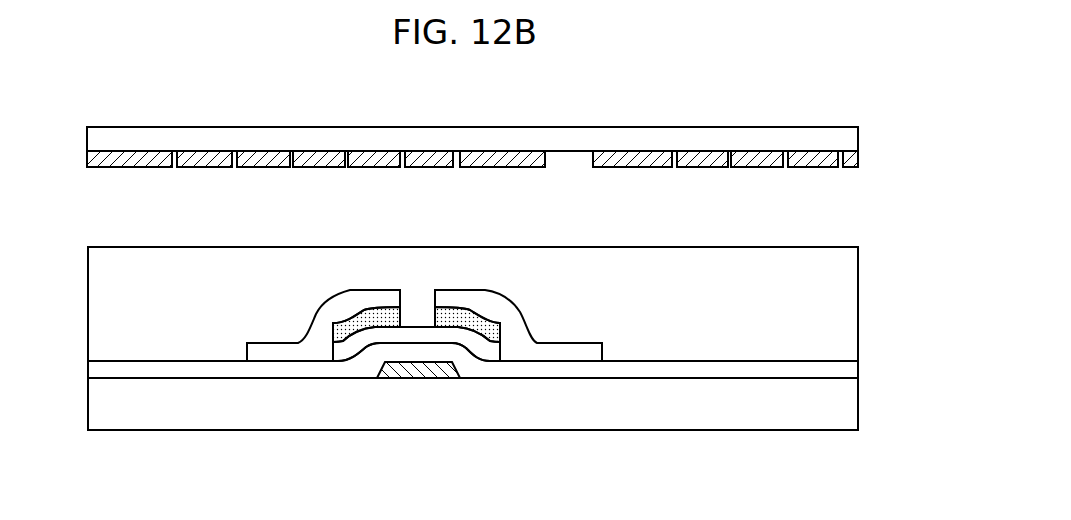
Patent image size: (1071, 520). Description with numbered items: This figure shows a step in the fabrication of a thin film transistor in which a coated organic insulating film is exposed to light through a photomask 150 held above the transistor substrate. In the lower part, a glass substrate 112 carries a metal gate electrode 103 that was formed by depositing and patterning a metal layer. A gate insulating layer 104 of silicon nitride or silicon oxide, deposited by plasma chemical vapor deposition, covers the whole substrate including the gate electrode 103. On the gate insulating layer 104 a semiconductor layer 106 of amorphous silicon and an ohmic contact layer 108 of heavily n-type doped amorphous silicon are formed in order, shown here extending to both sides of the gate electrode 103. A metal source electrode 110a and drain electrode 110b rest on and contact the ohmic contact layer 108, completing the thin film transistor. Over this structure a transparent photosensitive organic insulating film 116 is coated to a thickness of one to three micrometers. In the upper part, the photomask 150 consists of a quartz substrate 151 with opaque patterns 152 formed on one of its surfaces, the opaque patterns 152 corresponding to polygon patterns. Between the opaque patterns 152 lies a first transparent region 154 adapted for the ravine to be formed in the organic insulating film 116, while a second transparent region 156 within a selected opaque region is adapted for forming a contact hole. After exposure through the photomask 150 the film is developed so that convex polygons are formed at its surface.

The photomask 150 is at (684, 97).
The substrate 151 is at (818, 140).
The opaque patterns 152 is at (136, 158).
The first transparent region 154 is at (228, 140).
The second transparent region 156 is at (567, 161).
The photosensitive organic insulating film 116 is at (213, 285).
The glass substrate 112 is at (630, 413).
The gate insulating layer 104 is at (706, 370).
The gate electrode 103 is at (407, 373).
The semiconductor layer 106 is at (492, 352).
The ohmic contact layer 108 is at (486, 330).
The source electrode 110a is at (343, 305).
The drain electrode 110b is at (452, 297).